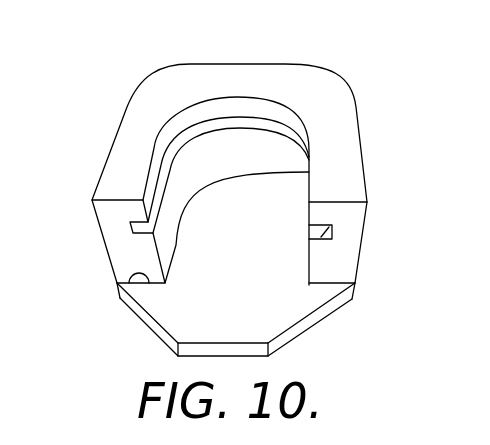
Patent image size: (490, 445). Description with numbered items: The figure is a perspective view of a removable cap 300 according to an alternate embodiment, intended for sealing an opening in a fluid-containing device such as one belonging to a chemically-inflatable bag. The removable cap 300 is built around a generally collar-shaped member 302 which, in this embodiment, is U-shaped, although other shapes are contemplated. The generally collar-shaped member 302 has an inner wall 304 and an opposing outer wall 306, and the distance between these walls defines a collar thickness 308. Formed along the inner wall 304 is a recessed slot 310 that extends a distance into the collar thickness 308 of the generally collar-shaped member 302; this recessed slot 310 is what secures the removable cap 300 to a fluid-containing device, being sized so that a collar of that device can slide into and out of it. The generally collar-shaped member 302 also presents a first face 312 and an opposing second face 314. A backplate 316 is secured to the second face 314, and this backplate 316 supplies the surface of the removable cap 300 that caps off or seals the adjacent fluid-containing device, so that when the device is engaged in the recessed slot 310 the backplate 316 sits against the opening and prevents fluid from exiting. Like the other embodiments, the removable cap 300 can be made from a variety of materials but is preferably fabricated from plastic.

The removable cap 300 is at (305, 41).
The generally collar-shaped member 302 is at (360, 121).
The inner wall 304 is at (260, 161).
The outer wall 306 is at (99, 224).
The collar thickness 308 is at (287, 173).
The recessed slot 310 is at (332, 225).
The first face 312 is at (260, 90).
The second face 314 is at (120, 287).
The backplate 316 is at (257, 287).